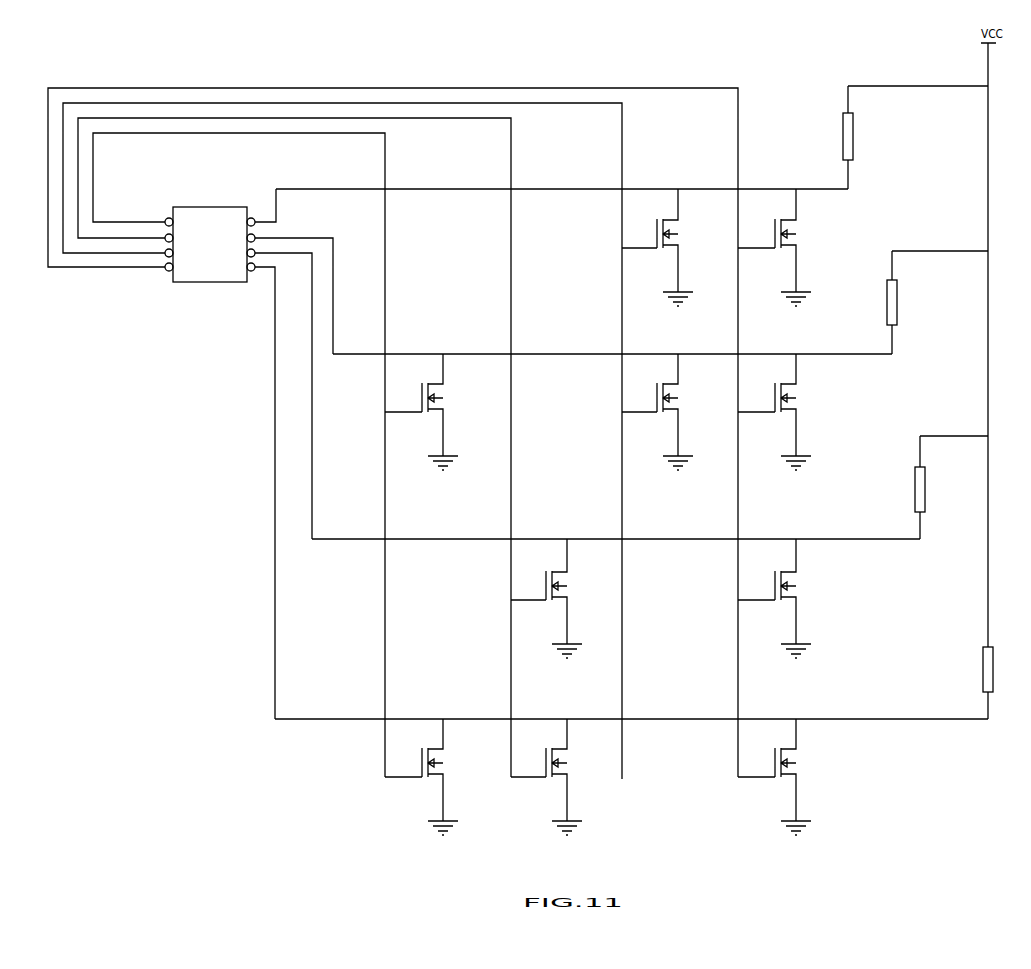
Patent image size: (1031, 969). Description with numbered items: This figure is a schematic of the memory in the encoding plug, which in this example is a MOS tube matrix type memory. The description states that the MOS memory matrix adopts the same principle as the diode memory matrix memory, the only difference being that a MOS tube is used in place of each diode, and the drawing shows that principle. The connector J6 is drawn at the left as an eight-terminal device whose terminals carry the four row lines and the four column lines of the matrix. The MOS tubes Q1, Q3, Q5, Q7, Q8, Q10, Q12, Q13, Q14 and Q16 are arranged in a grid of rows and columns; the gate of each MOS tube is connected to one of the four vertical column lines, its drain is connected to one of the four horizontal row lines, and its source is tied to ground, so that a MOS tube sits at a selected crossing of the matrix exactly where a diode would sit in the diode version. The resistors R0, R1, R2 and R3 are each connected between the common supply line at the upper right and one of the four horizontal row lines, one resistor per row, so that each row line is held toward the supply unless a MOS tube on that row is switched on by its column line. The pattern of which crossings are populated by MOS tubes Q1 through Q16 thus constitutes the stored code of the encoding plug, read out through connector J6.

The connector J6 is at (188, 237).
The pull-up resistor 10K R0 is at (915, 137).
The pull-up resistor 10K R1 is at (937, 302).
The pull-up resistor 10K R2 is at (951, 487).
The pull-up resistor 10K R3 is at (1001, 669).
The MOSFET transistor Q1 is at (778, 247).
The MOSFET transistor Q3 is at (661, 247).
The MOSFET transistor Q5 is at (425, 412).
The MOSFET transistor Q7 is at (661, 412).
The MOSFET transistor Q8 is at (778, 412).
The MOSFET transistor Q10 is at (554, 598).
The MOSFET transistor Q12 is at (782, 598).
The MOSFET transistor Q13 is at (429, 777).
The MOSFET transistor Q14 is at (554, 777).
The MOSFET transistor Q16 is at (782, 777).